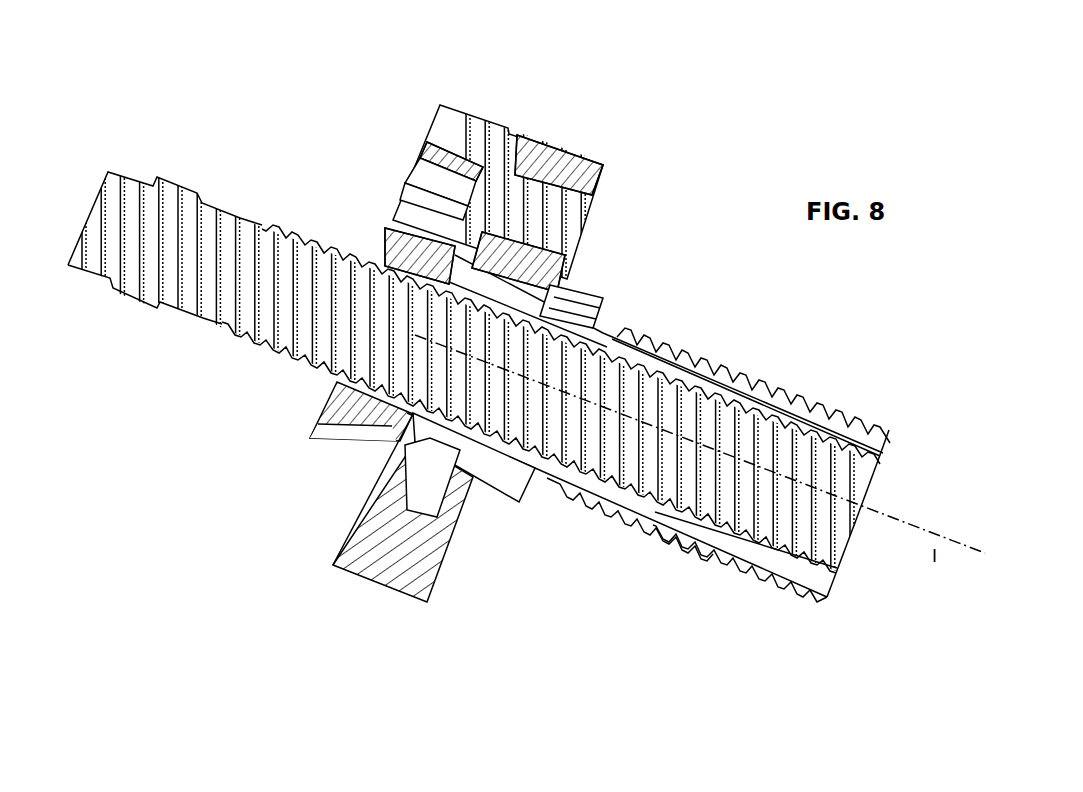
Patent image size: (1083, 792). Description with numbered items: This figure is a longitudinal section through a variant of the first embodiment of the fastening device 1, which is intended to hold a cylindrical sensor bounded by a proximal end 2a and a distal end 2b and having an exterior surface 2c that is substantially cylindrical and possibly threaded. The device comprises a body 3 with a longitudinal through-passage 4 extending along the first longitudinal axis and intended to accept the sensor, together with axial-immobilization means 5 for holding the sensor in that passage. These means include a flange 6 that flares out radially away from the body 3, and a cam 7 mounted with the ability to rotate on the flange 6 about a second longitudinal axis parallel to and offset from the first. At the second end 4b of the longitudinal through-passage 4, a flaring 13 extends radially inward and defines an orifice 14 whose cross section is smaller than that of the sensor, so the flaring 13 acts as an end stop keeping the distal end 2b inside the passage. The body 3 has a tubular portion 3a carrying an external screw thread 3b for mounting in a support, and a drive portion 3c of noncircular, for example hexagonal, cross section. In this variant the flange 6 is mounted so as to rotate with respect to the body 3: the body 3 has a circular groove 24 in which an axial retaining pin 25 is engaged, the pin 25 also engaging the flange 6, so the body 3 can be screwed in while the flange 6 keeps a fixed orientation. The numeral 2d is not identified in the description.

The fastening device 1 is at (722, 195).
The proximal end 2a is at (110, 170).
The distal end 2b is at (856, 466).
The exterior surface 2c is at (282, 217).
The thread groove 2d is at (252, 346).
The body 3 is at (758, 600).
The tubular portion 3a is at (700, 562).
The external screw thread 3b is at (650, 534).
The drive portion 3c is at (592, 300).
The longitudinal through-passage 4 is at (735, 410).
The second end 4b is at (840, 530).
The axial-immobilization means 5 is at (398, 168).
The flange 6 is at (385, 590).
The cam 7 is at (452, 135).
The flaring 13 is at (884, 462).
The orifice 14 is at (878, 488).
The circular groove 24 is at (437, 456).
The axial retaining pin 25 is at (518, 273).